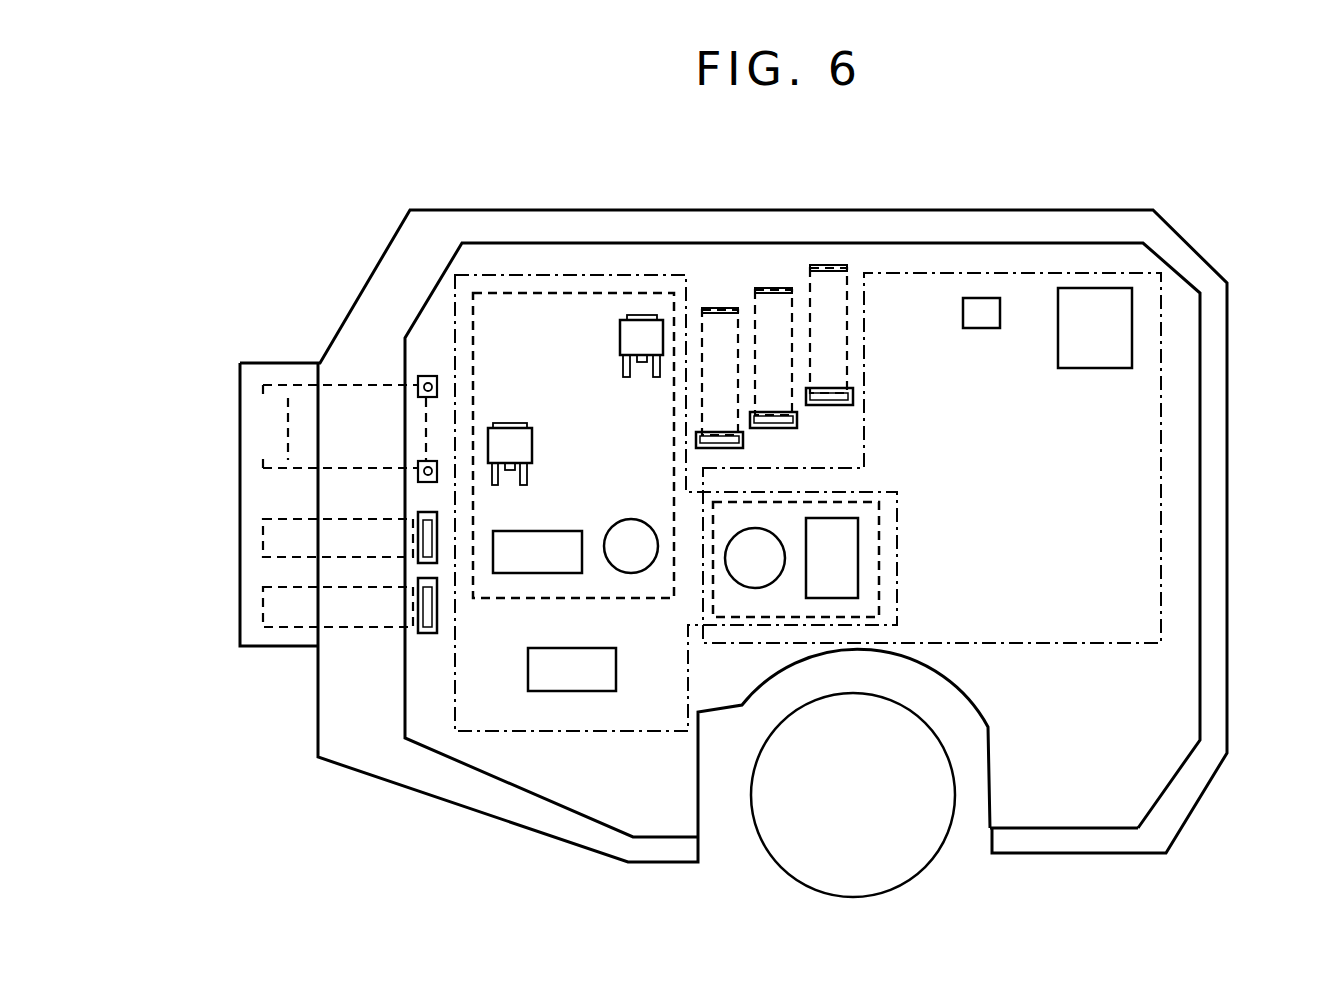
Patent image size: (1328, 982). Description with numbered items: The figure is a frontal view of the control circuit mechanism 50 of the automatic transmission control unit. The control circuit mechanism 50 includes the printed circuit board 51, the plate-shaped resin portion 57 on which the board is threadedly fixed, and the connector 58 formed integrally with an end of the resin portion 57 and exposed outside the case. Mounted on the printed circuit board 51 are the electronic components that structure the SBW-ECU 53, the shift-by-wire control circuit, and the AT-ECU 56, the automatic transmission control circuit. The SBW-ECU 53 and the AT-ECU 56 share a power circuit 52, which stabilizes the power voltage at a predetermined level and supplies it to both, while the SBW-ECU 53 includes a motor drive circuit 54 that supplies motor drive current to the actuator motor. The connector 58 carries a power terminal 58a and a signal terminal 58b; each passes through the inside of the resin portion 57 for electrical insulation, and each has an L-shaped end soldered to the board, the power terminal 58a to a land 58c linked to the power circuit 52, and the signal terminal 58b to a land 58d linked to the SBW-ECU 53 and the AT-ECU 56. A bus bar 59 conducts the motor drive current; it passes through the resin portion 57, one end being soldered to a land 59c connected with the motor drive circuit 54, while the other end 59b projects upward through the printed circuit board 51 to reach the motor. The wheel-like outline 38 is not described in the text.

The wheel 38 is at (895, 840).
The control circuit mechanism 50 is at (1163, 167).
The printed circuit board 51 is at (1160, 702).
The power circuit 52 is at (742, 603).
The SBW-ECU 53 is at (473, 727).
The motor drive circuit 54 is at (488, 293).
The AT-ECU 56 is at (1023, 290).
The resin portion 57 is at (363, 736).
The connector 58 is at (250, 512).
The power terminal 58a is at (275, 613).
The signal terminal 58b is at (267, 388).
The land 58c is at (425, 633).
The land 58d is at (418, 380).
The bus bar 59 is at (820, 300).
The end 59b is at (837, 265).
The land 59c is at (830, 405).